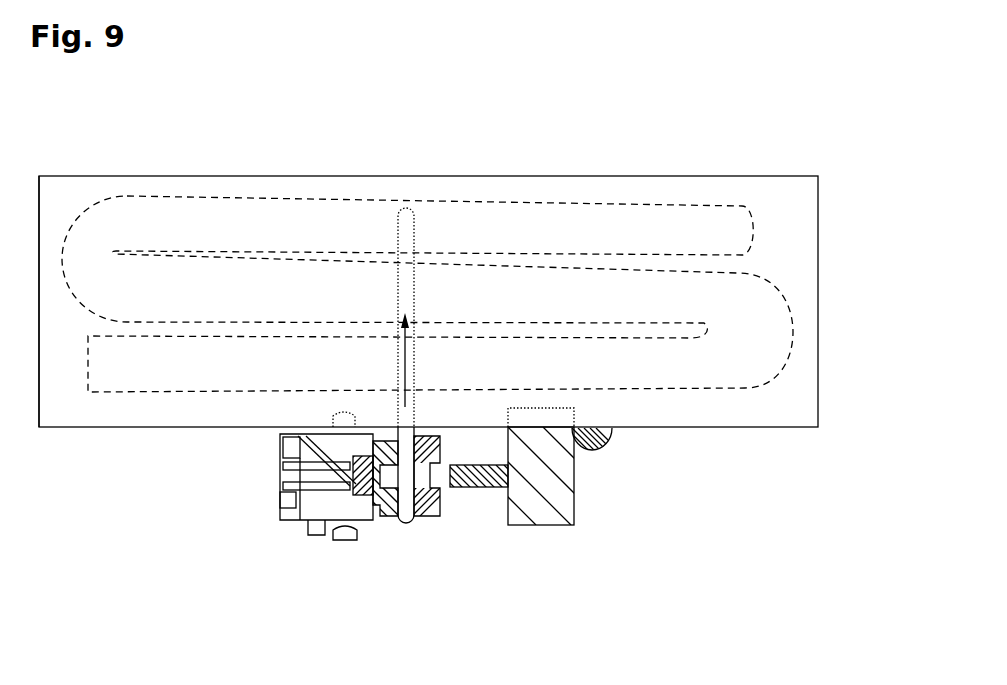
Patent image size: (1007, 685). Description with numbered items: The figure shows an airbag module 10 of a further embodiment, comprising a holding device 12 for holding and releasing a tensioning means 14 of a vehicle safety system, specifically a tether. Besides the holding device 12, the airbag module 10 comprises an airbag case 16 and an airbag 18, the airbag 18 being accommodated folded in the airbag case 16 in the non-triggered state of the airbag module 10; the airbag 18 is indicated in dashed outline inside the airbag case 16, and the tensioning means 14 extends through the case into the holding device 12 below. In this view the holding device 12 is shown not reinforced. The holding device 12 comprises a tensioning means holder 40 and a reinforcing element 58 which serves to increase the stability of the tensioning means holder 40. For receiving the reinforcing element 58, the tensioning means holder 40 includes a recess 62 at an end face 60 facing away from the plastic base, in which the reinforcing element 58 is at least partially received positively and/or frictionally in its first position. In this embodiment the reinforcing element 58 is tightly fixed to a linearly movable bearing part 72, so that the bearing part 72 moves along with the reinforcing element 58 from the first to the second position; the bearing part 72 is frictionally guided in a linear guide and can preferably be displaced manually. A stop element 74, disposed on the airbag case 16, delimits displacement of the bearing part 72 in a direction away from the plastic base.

The airbag module 10 is at (693, 160).
The holding device 12 is at (300, 557).
The tensioning means 14 is at (409, 525).
The airbag case 16 is at (82, 187).
The airbag 18 is at (319, 212).
The tensioning means holder 40 is at (380, 525).
The reinforcing element 58 is at (488, 480).
The end face 60 is at (427, 477).
The recess 62 is at (440, 490).
The bearing part 72 is at (543, 507).
The stop element 74 is at (592, 448).